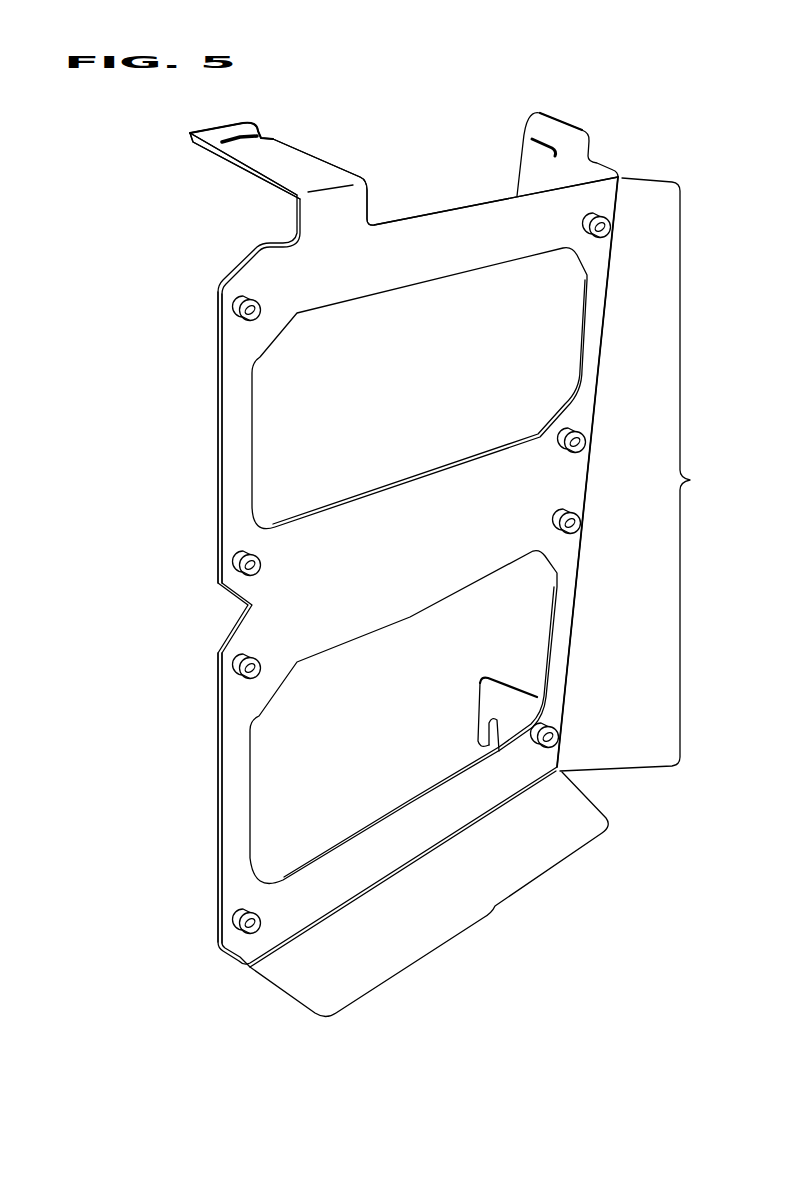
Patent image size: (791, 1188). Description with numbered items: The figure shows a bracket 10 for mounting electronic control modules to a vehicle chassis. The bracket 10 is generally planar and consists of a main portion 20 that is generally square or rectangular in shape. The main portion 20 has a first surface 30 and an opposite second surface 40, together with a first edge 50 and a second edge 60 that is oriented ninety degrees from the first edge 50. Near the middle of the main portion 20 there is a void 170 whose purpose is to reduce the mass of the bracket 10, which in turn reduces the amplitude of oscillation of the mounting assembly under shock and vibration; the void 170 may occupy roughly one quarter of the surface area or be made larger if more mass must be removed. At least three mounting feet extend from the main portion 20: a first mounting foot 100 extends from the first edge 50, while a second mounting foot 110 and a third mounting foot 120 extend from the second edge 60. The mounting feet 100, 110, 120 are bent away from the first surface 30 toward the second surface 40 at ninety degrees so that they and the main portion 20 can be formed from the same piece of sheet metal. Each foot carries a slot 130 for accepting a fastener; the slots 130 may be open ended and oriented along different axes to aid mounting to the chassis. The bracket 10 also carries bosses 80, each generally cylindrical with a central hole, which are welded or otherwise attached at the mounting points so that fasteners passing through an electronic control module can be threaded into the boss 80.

The bracket 10 is at (124, 560).
The main portion 20 is at (486, 597).
The first surface 30 is at (233, 870).
The second surface 40 is at (217, 824).
The first edge 50 is at (472, 207).
The second edge 60 is at (577, 582).
The boss 80 is at (605, 224).
The first mounting foot 100 is at (189, 131).
The second mounting foot 110 is at (563, 124).
The third mounting foot 120 is at (500, 697).
The slot 130 is at (263, 135).
The void 170 is at (310, 437).